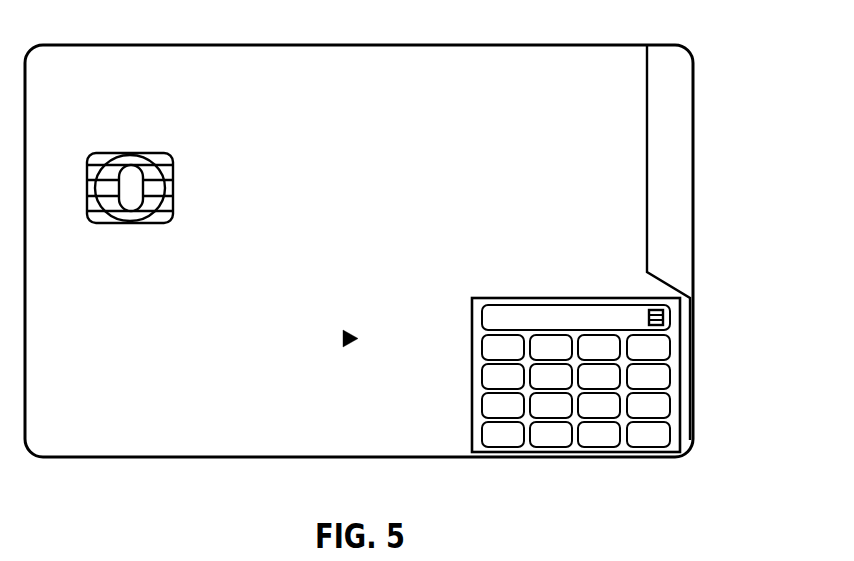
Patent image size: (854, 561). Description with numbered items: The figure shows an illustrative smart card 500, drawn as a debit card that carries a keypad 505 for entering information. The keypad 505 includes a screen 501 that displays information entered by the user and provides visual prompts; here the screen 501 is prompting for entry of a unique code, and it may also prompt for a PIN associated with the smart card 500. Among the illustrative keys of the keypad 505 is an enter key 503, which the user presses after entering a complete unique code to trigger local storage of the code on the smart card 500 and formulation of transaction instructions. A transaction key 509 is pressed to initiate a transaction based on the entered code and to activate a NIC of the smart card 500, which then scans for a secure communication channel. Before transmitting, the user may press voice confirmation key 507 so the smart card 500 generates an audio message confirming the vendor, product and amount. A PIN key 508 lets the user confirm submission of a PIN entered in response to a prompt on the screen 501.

The smart card 500 is at (102, 45).
The screen 501 is at (482, 317).
The enter key 503 is at (482, 435).
The keypad 505 is at (584, 404).
The voice confirmation key 507 is at (482, 408).
The PIN key 508 is at (573, 407).
The transaction key 509 is at (547, 448).